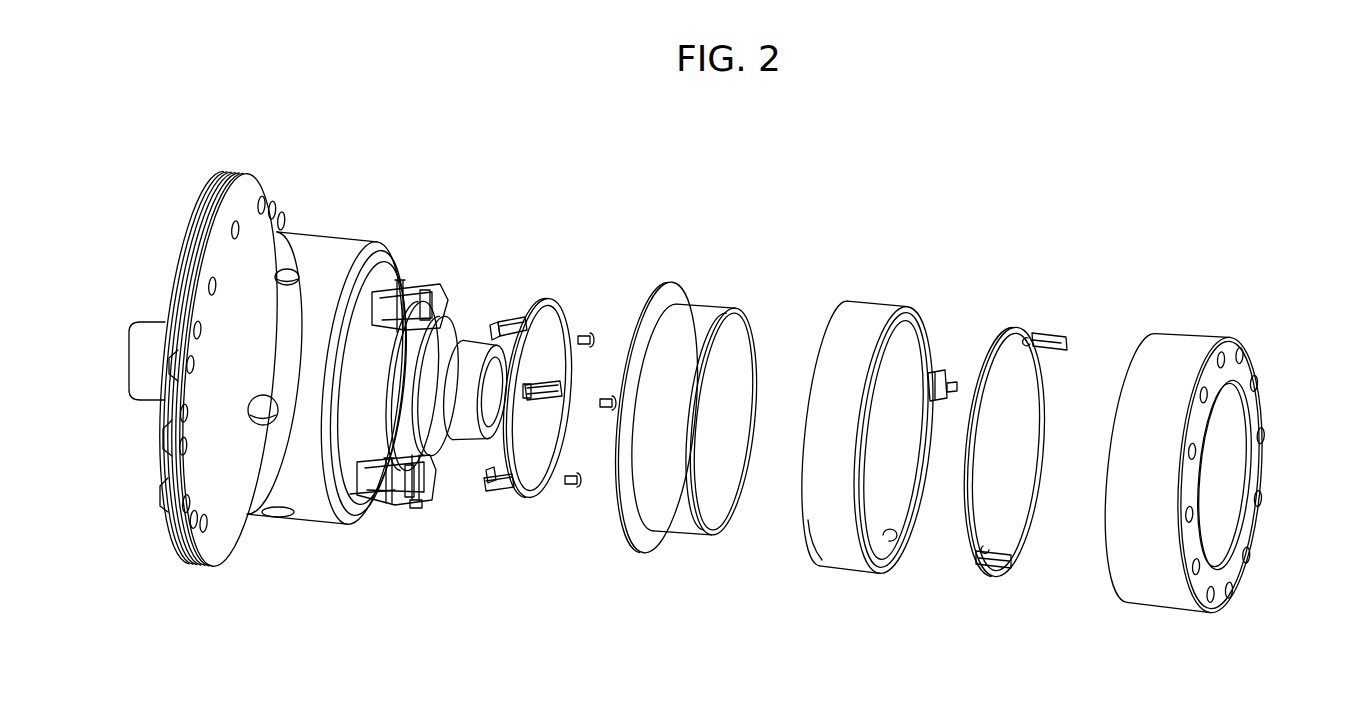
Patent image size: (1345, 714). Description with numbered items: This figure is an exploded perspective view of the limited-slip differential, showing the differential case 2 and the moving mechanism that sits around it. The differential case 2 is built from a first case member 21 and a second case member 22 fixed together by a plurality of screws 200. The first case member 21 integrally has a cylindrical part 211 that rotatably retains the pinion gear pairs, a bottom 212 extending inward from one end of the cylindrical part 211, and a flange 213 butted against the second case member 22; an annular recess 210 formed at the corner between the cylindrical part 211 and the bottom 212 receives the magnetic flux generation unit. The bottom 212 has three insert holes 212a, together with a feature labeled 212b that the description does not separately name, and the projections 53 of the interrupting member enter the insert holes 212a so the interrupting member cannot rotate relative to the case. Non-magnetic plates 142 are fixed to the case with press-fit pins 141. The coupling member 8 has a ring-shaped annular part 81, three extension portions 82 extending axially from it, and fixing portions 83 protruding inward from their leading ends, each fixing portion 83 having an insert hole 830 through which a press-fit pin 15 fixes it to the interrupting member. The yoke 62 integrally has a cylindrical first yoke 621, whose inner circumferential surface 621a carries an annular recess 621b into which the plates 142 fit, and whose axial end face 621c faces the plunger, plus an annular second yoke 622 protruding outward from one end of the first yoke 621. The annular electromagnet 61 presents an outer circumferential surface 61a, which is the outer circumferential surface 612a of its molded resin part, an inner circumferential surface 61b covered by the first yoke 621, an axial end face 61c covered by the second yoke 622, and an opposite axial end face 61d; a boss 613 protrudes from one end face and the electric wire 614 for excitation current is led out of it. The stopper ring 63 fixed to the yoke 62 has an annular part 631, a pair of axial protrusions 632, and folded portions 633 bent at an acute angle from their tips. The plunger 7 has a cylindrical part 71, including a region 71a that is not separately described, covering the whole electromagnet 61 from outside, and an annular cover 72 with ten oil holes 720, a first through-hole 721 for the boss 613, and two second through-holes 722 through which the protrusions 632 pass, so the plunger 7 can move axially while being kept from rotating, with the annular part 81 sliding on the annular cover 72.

The differential case 2 is at (226, 352).
The first case member 21 is at (246, 355).
The second case member 22 is at (232, 180).
The screws 200 is at (266, 208).
The cylindrical part 211 is at (328, 244).
The annular recess 210 is at (397, 248).
The bottom 212 is at (410, 290).
The insert holes 212a is at (408, 286).
The bracket block 212b is at (432, 296).
The press-fit pins 141 is at (420, 492).
The plates 142 is at (418, 509).
The projections 53 is at (357, 495).
The flange 213 is at (226, 556).
The coupling member 8 is at (527, 395).
The annular part 81 is at (535, 500).
The extension portions 82 is at (514, 320).
The fixing portions 83 is at (495, 326).
The insert hole 830 is at (545, 393).
The press-fit pin 15 is at (613, 395).
The yoke 62 is at (708, 411).
The first yoke 621 is at (720, 423).
The inner circumferential surface 621a is at (728, 356).
The annular recess 621b is at (732, 488).
The axial end face 621c is at (736, 312).
The second yoke 622 is at (641, 548).
The electromagnet 61 is at (882, 439).
The outer circumferential surface 61a is at (836, 575).
The outer circumferential surface of the molded resin part 612a is at (855, 437).
The inner circumferential surface 61b is at (892, 548).
The axial end face 61c is at (880, 570).
The axial end face 61d is at (805, 540).
The boss 613 is at (936, 370).
The electric wire 614 is at (955, 383).
The stopper ring 63 is at (1020, 440).
The annular part 631 is at (1028, 532).
The protrusions 632 is at (1049, 348).
The folded portions 633 is at (1051, 338).
The plunger 7 is at (1215, 464).
The cylindrical part 71 is at (1162, 614).
The cover opening 71a is at (1225, 518).
The annular cover 72 is at (1250, 540).
The oil holes 720 is at (1259, 490).
The first through-hole 721 is at (1265, 418).
The second through-holes 722 is at (1262, 352).